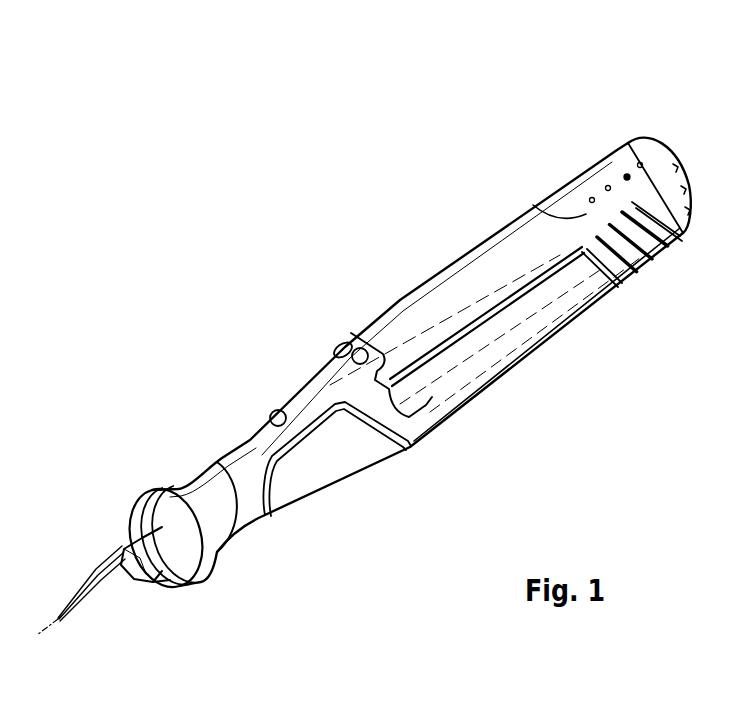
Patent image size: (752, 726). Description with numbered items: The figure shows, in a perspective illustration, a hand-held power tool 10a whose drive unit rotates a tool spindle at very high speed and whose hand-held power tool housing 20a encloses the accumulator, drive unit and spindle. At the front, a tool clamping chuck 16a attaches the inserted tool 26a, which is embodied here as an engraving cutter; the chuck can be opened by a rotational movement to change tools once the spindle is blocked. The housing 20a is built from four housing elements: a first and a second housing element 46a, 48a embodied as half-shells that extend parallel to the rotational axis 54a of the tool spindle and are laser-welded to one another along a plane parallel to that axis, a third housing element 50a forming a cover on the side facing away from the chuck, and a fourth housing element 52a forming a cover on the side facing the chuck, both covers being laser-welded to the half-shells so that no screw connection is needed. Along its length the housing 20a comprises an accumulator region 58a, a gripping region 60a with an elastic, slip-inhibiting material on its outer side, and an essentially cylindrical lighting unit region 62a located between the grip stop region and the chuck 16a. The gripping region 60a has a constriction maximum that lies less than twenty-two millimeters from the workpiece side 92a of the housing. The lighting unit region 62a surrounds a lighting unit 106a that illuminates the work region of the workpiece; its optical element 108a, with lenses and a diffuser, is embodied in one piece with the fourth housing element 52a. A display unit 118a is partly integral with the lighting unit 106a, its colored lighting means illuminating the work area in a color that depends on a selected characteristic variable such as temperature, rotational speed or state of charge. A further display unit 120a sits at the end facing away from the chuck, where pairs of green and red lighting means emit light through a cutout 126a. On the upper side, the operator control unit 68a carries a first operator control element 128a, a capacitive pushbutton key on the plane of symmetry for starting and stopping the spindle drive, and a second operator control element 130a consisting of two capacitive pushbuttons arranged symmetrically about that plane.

The hand-held power tool 10a is at (611, 100).
The hand-held power tool housing 20a is at (432, 321).
The tool clamping chuck 16a is at (122, 534).
The inserted tool 26a is at (97, 584).
The first housing element 46a is at (440, 280).
The second housing element 48a is at (494, 263).
The third housing element 50a is at (655, 150).
The fourth housing element 52a is at (140, 500).
The rotational axis 54a is at (42, 640).
The accumulator region 58a is at (516, 166).
The gripping region 60a is at (261, 367).
The lighting unit region 62a is at (108, 478).
The operator control unit 68a is at (337, 301).
The workpiece side 92a is at (162, 590).
The lighting unit 106a is at (169, 609).
The display unit 118a is at (190, 584).
The optical element 108a is at (133, 547).
The further display unit 120a is at (603, 164).
The cutout 126a is at (627, 175).
The first operator control element 128a is at (270, 414).
The second operator control element 130a is at (345, 342).